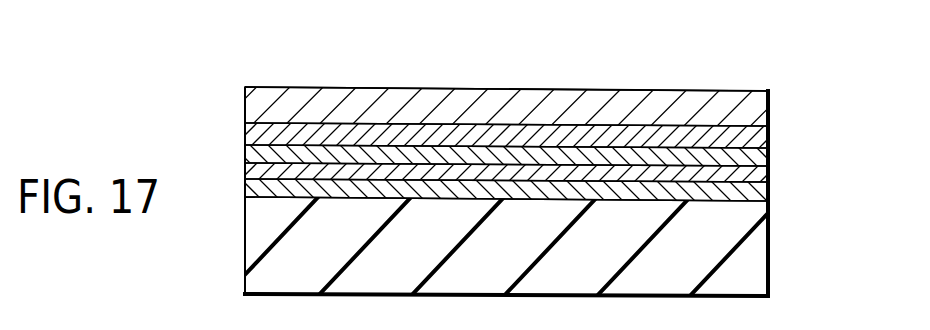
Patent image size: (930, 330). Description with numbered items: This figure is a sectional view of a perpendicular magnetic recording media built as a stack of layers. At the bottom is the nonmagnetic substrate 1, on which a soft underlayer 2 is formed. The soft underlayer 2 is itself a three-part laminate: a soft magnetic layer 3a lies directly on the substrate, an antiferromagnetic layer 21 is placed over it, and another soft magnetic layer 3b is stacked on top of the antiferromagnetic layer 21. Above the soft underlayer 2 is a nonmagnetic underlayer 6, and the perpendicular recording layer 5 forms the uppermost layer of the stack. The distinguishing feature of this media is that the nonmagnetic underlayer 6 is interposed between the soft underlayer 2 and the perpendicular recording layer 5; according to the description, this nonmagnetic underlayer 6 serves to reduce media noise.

The nonmagnetic substrate 1 is at (757, 265).
The soft underlayer 2 is at (556, 173).
The soft magnetic layer 3a is at (533, 199).
The antiferromagnetic layer 21 is at (768, 163).
The soft magnetic layer 3b is at (769, 152).
The nonmagnetic underlayer 6 is at (769, 127).
The perpendicular recording layer 5 is at (770, 93).